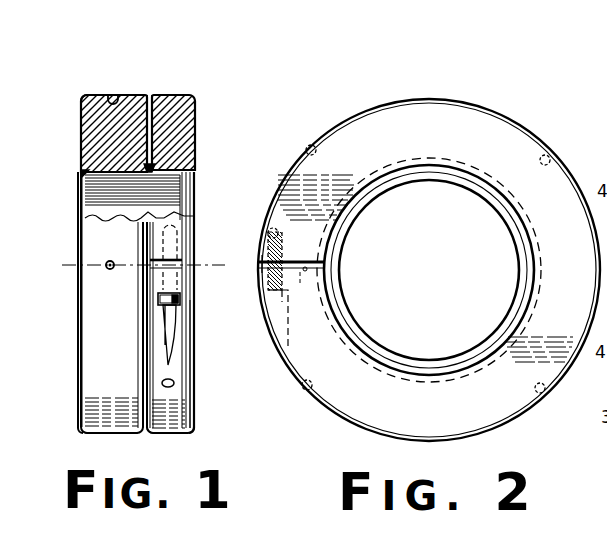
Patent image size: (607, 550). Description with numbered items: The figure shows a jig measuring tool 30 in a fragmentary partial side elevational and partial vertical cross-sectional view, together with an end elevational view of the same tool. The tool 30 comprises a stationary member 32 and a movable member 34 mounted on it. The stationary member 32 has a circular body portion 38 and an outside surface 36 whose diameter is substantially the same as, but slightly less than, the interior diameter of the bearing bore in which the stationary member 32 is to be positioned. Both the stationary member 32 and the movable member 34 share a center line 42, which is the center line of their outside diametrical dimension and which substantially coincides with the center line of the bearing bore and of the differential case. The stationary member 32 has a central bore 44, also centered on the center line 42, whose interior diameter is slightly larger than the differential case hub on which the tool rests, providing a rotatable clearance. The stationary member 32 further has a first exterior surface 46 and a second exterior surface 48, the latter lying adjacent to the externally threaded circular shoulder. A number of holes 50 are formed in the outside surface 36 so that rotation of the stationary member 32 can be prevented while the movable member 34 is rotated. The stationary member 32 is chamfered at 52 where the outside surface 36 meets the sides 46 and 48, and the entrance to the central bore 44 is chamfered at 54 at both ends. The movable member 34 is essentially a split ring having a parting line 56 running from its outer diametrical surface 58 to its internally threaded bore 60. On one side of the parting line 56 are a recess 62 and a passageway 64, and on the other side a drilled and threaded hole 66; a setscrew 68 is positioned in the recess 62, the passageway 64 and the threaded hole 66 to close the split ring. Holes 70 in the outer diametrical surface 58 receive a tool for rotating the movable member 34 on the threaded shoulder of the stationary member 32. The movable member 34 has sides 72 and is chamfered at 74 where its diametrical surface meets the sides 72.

In FIG. 1, the jig measuring tool 30 is at (136, 92).
In FIG. 2, the jig measuring tool 30 is at (488, 103).
In FIG. 1, the stationary member 32 is at (75, 371).
In FIG. 1, the movable member 34 is at (201, 103).
In FIG. 1, the outside surface 36 is at (98, 93).
In FIG. 1, the circular body portion 38 is at (98, 126).
In FIG. 1, the center line 42 is at (48, 262).
In FIG. 1, the central bore 44 is at (178, 185).
In FIG. 2, the central bore 44 is at (462, 186).
In FIG. 1, the first exterior surface 46 is at (82, 166).
In FIG. 1, the second exterior surface 48 is at (262, 30).
In FIG. 1, the holes 50 is at (114, 94).
In FIG. 1, the chamfer 52 is at (137, 436).
In FIG. 1, the chamfer 54 is at (85, 218).
In FIG. 2, the parting line 56 is at (307, 271).
In FIG. 1, the outer diametrical surface 58 is at (188, 433).
In FIG. 1, the internally threaded bore 60 is at (166, 264).
In FIG. 2, the internally threaded bore 60 is at (334, 262).
In FIG. 1, the recess 62 is at (193, 353).
In FIG. 2, the recess 62 is at (287, 347).
In FIG. 1, the passageway 64 is at (181, 291).
In FIG. 2, the passageway 64 is at (266, 277).
In FIG. 1, the drilled and threaded hole 66 is at (176, 243).
In FIG. 2, the drilled and threaded hole 66 is at (268, 232).
In FIG. 1, the setscrew 68 is at (172, 338).
In FIG. 2, the setscrew 68 is at (243, 332).
In FIG. 1, the holes 70 is at (168, 388).
In FIG. 2, the holes 70 is at (312, 146).
In FIG. 1, the sides 72 is at (197, 158).
In FIG. 1, the chamfer 74 is at (152, 105).